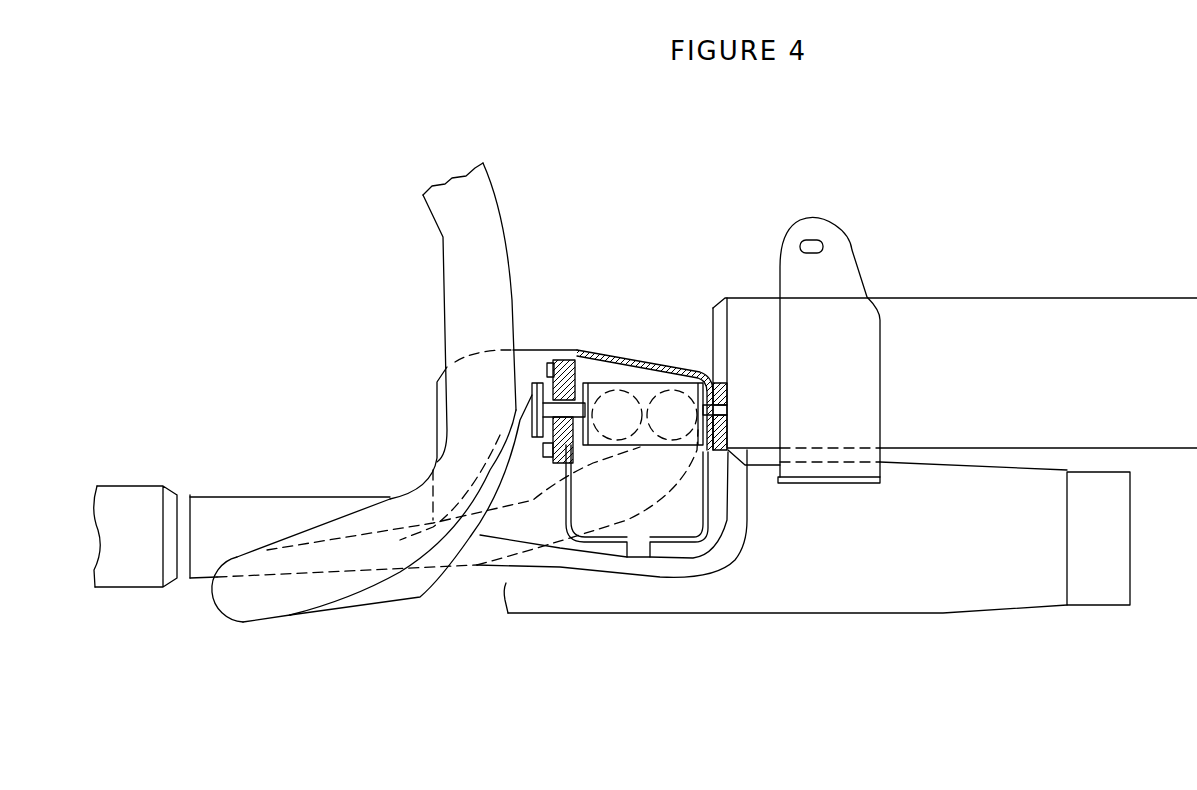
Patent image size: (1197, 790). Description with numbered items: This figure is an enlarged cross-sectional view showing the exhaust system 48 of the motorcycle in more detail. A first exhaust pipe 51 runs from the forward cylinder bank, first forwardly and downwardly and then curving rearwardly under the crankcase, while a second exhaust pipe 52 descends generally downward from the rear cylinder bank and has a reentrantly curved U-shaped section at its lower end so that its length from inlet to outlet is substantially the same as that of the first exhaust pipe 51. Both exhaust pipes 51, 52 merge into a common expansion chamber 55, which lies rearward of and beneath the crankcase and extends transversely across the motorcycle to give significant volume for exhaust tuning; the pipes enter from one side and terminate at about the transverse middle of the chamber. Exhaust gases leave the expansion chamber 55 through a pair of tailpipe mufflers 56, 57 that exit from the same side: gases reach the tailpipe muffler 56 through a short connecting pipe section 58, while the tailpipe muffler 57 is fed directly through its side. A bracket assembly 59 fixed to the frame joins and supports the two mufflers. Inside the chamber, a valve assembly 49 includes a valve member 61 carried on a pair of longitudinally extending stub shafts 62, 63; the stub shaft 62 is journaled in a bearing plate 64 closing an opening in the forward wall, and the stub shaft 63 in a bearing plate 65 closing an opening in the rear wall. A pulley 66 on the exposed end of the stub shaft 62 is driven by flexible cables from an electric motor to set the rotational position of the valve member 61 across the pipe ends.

The exhaust system 48 is at (193, 631).
The valve assembly 49 is at (657, 376).
The first exhaust pipe 51 is at (225, 498).
The second exhaust pipe 52 is at (445, 238).
The expansion chamber 55 is at (742, 535).
The tailpipe muffler 56 is at (1092, 297).
The tailpipe muffler 57 is at (1008, 608).
The connecting pipe section 58 is at (686, 318).
The bracket assembly 59 is at (882, 346).
The valve member 61 is at (647, 380).
The stub shaft 62 is at (580, 352).
The stub shaft 63 is at (730, 382).
The bearing plate 64 is at (553, 360).
The bearing plate 65 is at (713, 450).
The pulley 66 is at (533, 383).